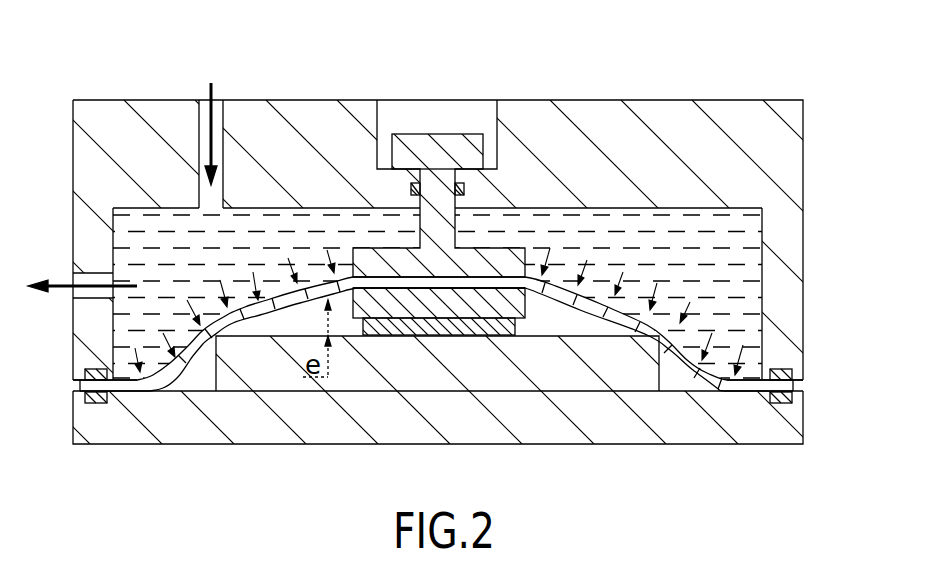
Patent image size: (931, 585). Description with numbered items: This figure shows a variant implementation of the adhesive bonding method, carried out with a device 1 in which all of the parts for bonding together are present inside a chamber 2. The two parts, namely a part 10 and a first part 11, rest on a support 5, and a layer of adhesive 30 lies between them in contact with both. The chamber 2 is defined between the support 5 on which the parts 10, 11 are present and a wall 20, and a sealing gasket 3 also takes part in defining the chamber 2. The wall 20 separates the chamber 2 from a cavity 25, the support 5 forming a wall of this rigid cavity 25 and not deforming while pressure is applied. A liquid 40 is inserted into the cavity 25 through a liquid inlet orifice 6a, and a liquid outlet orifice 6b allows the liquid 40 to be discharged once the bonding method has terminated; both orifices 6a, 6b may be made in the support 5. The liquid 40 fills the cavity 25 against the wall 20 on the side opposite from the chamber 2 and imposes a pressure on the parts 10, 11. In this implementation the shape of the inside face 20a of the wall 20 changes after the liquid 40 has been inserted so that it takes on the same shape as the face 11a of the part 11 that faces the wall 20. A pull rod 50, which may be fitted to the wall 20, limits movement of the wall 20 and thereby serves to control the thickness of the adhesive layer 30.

The device 1 is at (98, 176).
The chamber 2 is at (299, 312).
The sealing gasket 3 is at (87, 399).
The support 5 is at (478, 432).
The liquid inlet orifice 6a is at (222, 110).
The liquid outlet orifice 6b is at (77, 293).
The part 10 is at (593, 373).
The first part 11 is at (527, 302).
The face of the part 11a is at (420, 292).
The wall 20 is at (243, 306).
The inside face of the wall 20a is at (273, 303).
The cavity 25 is at (127, 242).
The adhesive layer 30 is at (465, 334).
The liquid 40 is at (142, 232).
The pull rod 50 is at (435, 150).